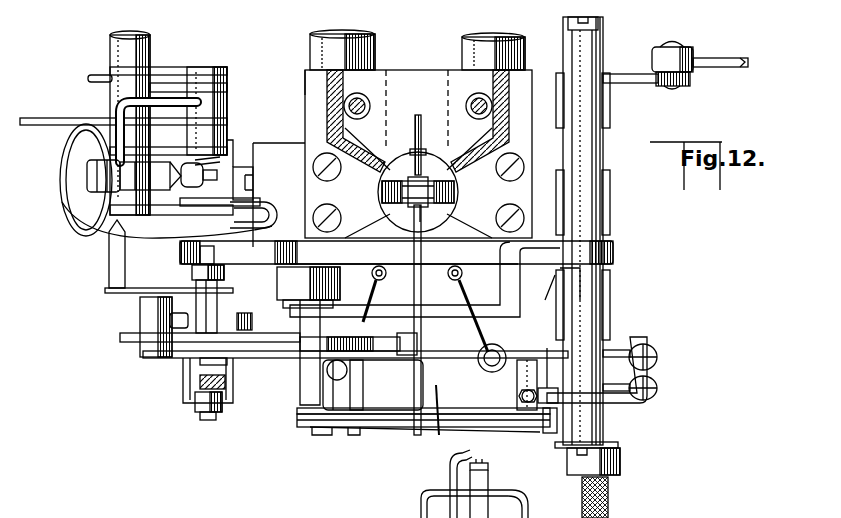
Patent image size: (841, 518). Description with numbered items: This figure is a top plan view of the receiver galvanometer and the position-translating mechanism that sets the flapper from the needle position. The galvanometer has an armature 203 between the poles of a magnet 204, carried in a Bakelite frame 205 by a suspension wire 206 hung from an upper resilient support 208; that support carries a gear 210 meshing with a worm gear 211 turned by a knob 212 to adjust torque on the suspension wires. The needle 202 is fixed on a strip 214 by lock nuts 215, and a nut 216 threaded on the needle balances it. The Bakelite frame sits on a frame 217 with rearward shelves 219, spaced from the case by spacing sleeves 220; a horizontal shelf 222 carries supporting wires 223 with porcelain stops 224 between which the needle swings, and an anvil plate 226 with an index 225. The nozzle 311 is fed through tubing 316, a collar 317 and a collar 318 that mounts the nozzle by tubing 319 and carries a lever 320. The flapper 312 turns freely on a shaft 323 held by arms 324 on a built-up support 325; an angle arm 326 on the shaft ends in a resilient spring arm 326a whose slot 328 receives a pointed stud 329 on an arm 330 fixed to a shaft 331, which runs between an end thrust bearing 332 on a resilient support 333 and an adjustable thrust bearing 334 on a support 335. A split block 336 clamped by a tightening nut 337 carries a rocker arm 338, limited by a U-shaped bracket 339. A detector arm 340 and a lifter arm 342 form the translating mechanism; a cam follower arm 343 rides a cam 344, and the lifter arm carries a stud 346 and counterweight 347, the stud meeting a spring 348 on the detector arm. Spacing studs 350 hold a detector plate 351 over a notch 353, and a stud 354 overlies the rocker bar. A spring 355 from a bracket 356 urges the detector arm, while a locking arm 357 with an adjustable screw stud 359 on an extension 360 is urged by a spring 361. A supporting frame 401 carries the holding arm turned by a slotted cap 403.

The needle 202 is at (417, 435).
The armature 203 is at (380, 194).
The magnet 204 is at (280, 152).
The Bakelite frame 205 is at (415, 80).
The suspension wire 206 is at (448, 478).
The upper resilient support 208 is at (530, 482).
The gear 210 is at (538, 511).
The worm gear 211 is at (394, 509).
The knob 212 is at (346, 509).
The strip 214 is at (458, 189).
The lock nuts 215 is at (423, 153).
The nut 216 is at (414, 152).
The frame 217 is at (624, 255).
The shelves 219 is at (312, 84).
The spacing sleeves 220 is at (325, 44).
The horizontal shelf 222 is at (436, 388).
The supporting wires 223 is at (466, 298).
The porcelain stops 224 is at (386, 280).
The index 225 is at (358, 436).
The anvil plate 226 is at (310, 430).
The nozzle 311 is at (160, 197).
The flapper 312 is at (224, 146).
The tubing 316 is at (97, 74).
The collar 317 is at (214, 78).
The collar 318 is at (216, 102).
The tubing 319 is at (115, 109).
The lever 320 is at (46, 113).
The shaft 323 is at (218, 163).
The arms 324 is at (173, 146).
The built-up support 325 is at (150, 47).
The angle arm 326 is at (197, 206).
The resilient spring arm 326a is at (285, 194).
The slot 328 is at (101, 237).
The pointed stud 329 is at (109, 270).
The arm 330 is at (114, 294).
The shaft 331 is at (218, 302).
The end thrust bearing 332 is at (225, 274).
The resilient support 333 is at (192, 268).
The thrust bearing 334 is at (226, 381).
The support 335 is at (194, 394).
The split block 336 is at (252, 321).
The tightening nut 337 is at (186, 316).
The rocker arm 338 is at (246, 342).
The U-shaped bracket 339 is at (185, 372).
The detector arm 340 is at (143, 356).
The lifter arm 342 is at (447, 308).
The cam follower arm 343 is at (631, 84).
The cam 344 is at (718, 68).
The stud 346 is at (306, 372).
The counterweight 347 is at (320, 283).
The spring 348 is at (370, 342).
The spacing studs 350 is at (355, 380).
The detector plate 351 is at (376, 414).
The notch 353 is at (297, 420).
The stud 354 is at (140, 320).
The spring 355 is at (655, 346).
The bracket 356 is at (636, 403).
The locking arm 357 is at (548, 432).
The adjustable screw stud 359 is at (520, 396).
The extension 360 is at (548, 340).
The spring 361 is at (657, 384).
The supporting frame 401 is at (620, 461).
The slotted cap 403 is at (608, 508).